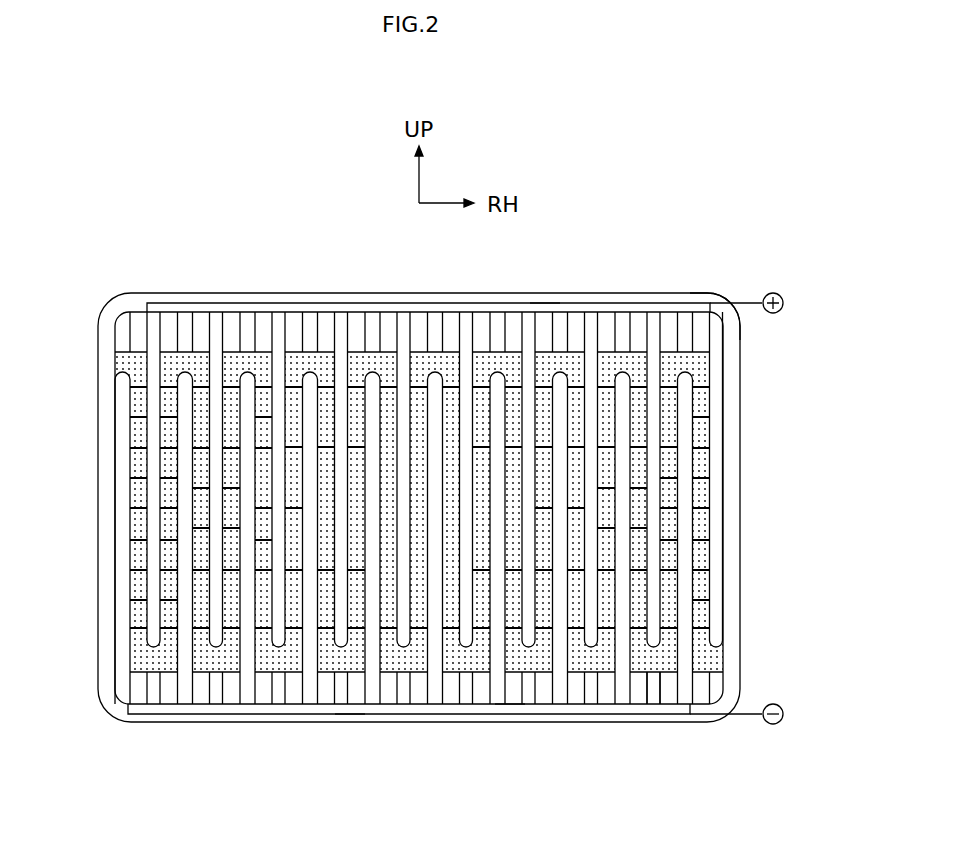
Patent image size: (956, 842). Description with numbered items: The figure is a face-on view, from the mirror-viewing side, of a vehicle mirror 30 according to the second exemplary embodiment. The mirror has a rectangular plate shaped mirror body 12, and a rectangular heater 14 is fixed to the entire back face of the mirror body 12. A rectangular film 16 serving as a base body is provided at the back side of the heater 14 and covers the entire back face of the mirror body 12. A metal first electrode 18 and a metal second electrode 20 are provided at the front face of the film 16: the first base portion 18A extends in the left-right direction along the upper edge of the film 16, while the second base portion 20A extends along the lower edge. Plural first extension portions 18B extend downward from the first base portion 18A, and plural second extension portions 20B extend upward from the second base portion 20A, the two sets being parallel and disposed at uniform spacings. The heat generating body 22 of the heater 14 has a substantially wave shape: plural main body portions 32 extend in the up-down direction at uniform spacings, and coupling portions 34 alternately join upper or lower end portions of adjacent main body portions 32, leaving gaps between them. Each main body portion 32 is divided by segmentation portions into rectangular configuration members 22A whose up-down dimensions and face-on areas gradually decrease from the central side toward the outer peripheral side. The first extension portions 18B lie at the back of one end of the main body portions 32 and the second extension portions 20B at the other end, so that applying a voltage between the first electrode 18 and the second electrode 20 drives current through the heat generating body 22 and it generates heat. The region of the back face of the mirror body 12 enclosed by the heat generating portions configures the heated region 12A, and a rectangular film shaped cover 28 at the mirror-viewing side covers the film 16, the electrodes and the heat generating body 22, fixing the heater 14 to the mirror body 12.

The mirror body 12 is at (126, 293).
The heated region 12A is at (342, 350).
The heater 14 is at (704, 293).
The film 16 is at (106, 380).
The first electrode 18 is at (237, 303).
The first base portion 18A is at (543, 302).
The first extension portions 18B is at (649, 311).
The second electrode 20 is at (277, 716).
The second base portion 20A is at (350, 716).
The second extension portions 20B is at (510, 706).
The heat generating body 22 is at (131, 467).
The configuration members 22A is at (106, 507).
The cover 28 is at (731, 397).
The vehicle mirror 30 is at (163, 196).
The main body portions 32 is at (708, 495).
The coupling portions 34 is at (653, 676).